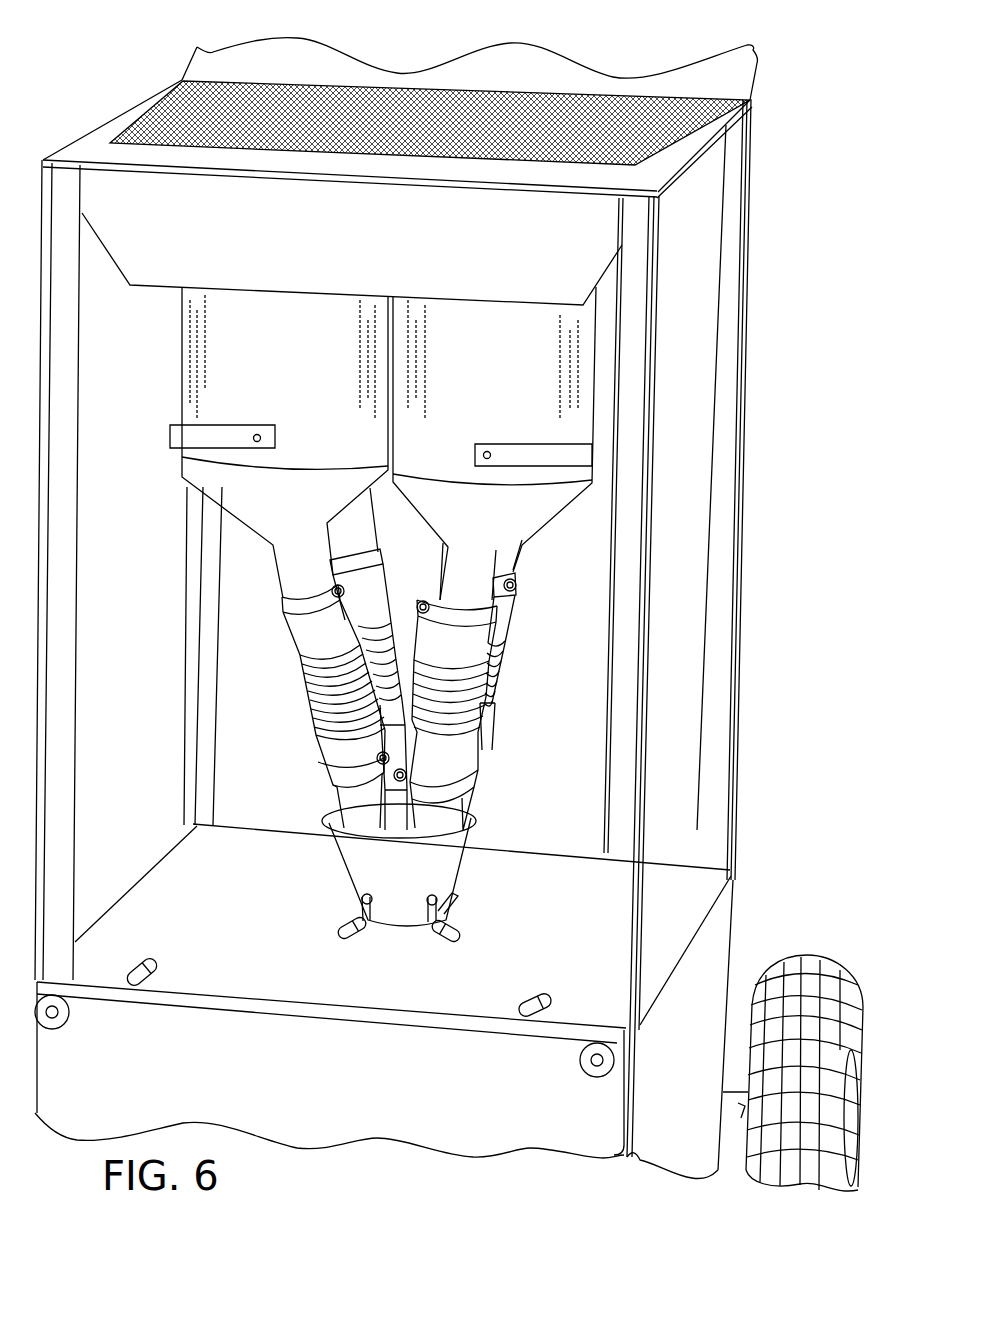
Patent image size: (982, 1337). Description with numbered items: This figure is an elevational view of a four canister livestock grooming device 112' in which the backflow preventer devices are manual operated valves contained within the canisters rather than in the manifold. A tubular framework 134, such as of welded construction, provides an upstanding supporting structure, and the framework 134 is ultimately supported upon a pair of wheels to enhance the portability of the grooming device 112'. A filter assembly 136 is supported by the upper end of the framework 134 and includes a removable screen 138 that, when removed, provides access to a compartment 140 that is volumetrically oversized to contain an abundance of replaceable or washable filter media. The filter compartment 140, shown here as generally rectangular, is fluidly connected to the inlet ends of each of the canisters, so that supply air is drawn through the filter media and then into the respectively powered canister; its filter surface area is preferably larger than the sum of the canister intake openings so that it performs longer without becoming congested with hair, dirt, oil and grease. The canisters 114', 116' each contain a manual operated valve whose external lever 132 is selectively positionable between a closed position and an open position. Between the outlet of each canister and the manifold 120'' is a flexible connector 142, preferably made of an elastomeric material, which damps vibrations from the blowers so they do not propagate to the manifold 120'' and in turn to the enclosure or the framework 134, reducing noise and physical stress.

The grooming device 112' is at (400, 111).
The removable screen 138 is at (640, 113).
The filter assembly 136 is at (694, 188).
The tubular framework 134 is at (752, 667).
The filter compartment 140 is at (90, 252).
The canister 114' is at (287, 442).
The canister 116' is at (494, 443).
The external lever 132 is at (172, 427).
The flexible connector 142 is at (310, 690).
The manifold 120'' is at (352, 853).